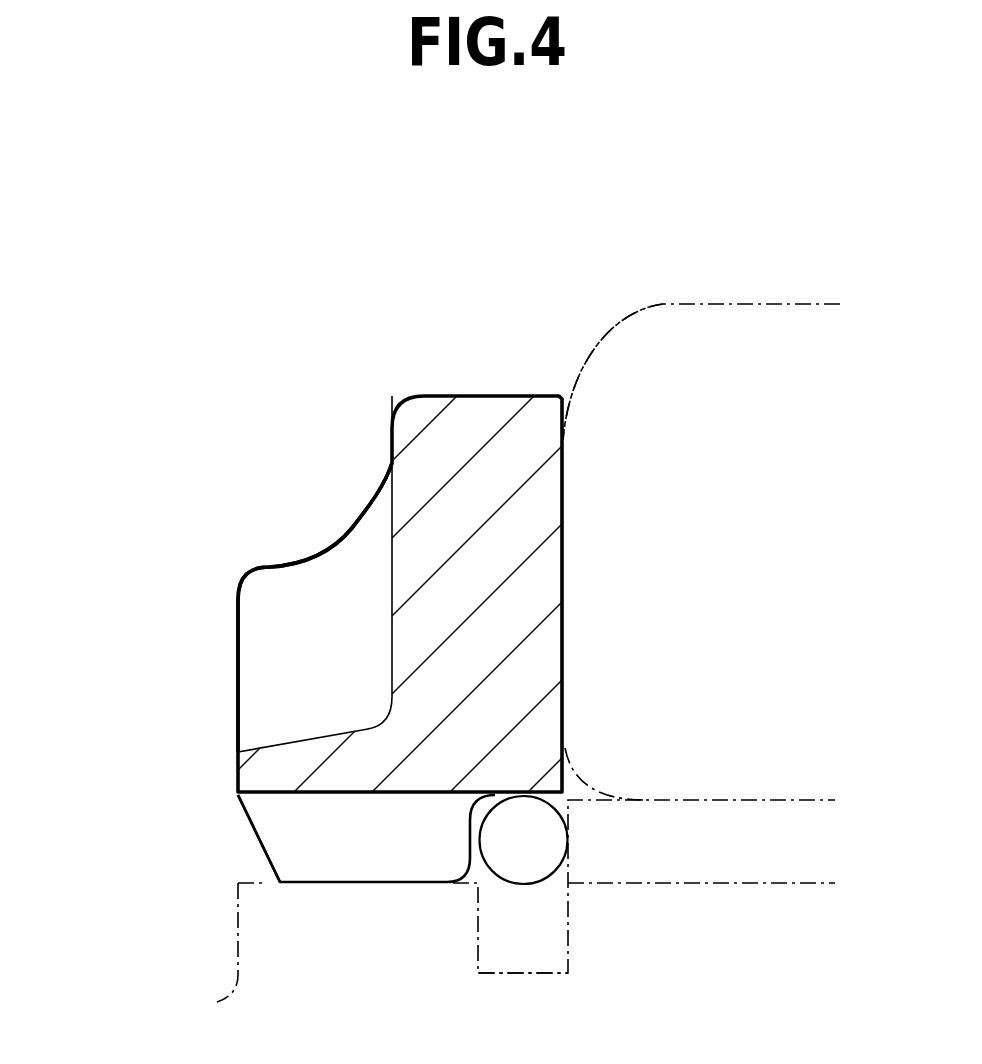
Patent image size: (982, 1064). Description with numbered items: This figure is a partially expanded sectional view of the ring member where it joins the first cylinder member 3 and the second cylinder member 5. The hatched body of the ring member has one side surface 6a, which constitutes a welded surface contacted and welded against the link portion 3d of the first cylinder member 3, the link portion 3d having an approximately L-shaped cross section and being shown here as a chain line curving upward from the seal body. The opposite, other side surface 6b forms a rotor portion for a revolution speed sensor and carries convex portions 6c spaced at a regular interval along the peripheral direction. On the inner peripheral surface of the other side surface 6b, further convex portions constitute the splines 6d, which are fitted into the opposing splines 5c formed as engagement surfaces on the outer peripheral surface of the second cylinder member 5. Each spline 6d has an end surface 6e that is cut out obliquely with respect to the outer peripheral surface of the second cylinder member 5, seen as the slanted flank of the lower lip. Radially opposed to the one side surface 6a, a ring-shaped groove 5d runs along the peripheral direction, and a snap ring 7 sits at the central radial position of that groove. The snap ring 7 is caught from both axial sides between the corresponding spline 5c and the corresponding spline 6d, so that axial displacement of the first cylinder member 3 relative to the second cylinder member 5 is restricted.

The first cylinder member 3 is at (707, 300).
The link portion 3d is at (577, 380).
The second cylinder member 5 is at (237, 960).
The splines 5c is at (686, 817).
The ring-shaped groove 5d is at (533, 973).
The one side surface 6a is at (563, 563).
The other side surface 6b is at (390, 582).
The convex portions 6c is at (280, 642).
The splines 6d is at (350, 845).
The end surface 6e is at (256, 838).
The snap ring 7 is at (483, 812).